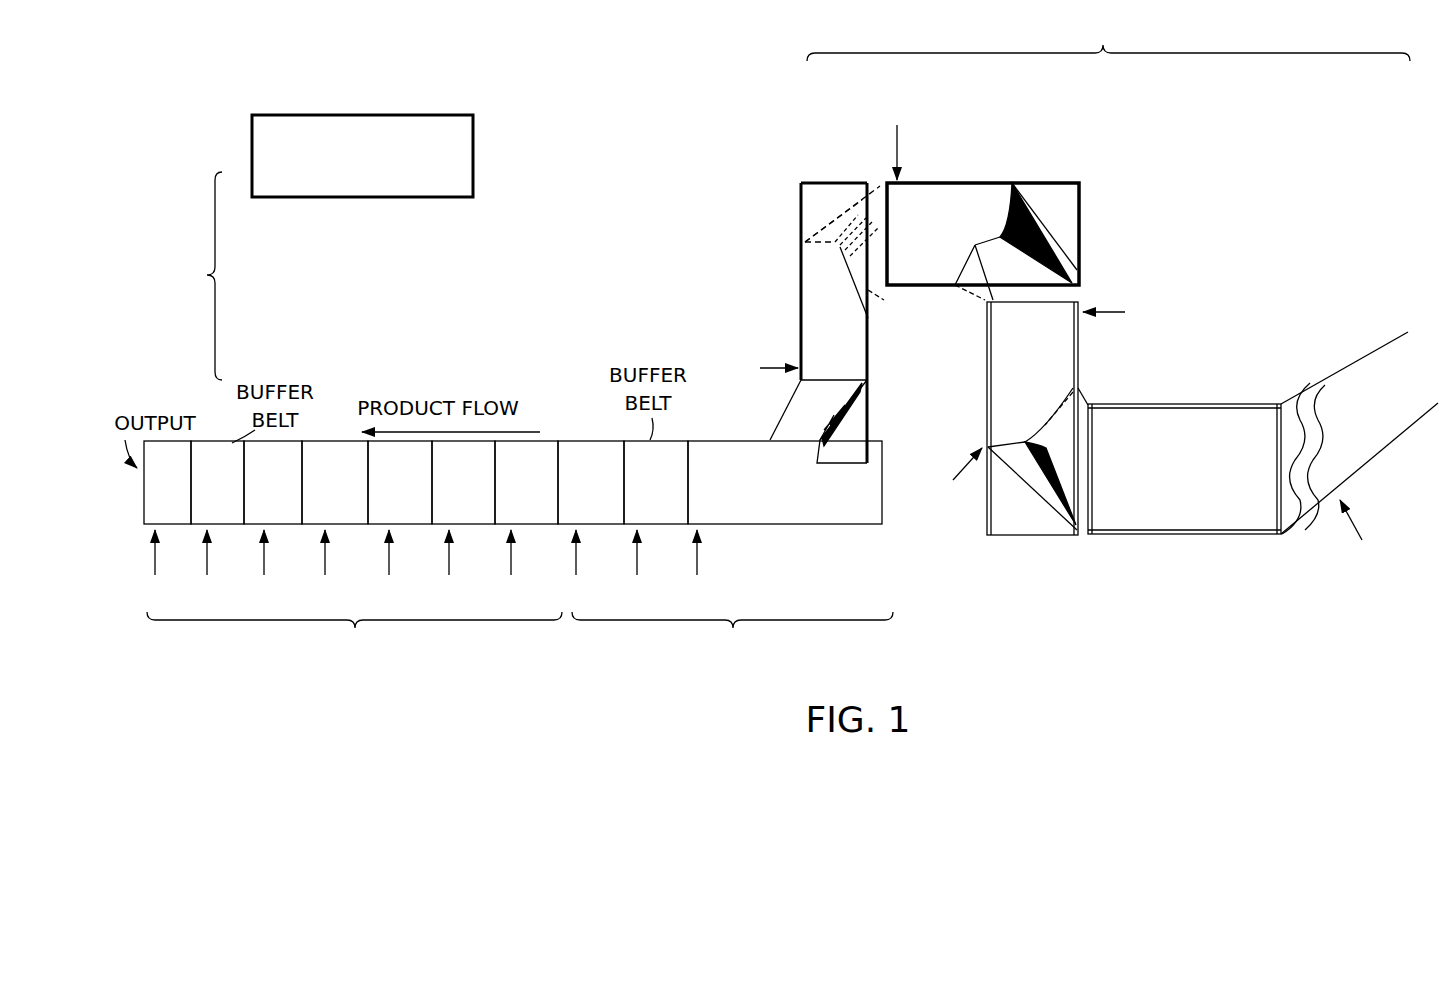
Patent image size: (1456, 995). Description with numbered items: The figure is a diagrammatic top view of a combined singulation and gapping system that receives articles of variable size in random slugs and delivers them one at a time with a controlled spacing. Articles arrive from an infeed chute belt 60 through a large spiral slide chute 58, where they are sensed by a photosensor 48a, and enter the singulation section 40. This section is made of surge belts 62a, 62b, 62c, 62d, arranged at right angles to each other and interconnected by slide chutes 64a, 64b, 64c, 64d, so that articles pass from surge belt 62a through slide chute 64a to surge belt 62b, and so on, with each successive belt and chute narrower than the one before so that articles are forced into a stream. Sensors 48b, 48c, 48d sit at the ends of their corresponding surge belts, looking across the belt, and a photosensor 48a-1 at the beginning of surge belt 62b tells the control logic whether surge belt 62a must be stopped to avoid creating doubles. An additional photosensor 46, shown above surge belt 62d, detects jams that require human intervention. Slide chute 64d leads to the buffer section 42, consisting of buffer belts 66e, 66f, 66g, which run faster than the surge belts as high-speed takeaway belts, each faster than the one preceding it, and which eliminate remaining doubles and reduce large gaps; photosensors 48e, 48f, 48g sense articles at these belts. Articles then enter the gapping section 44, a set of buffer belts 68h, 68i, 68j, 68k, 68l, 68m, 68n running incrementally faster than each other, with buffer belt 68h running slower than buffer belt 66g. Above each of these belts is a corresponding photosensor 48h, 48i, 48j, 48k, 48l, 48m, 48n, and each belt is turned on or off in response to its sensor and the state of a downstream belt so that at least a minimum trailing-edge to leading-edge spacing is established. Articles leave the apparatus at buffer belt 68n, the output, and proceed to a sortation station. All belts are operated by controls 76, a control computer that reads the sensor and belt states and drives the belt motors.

The singulation section 40 is at (1108, 39).
The buffer section 42 is at (732, 636).
The gapping section 44 is at (354, 636).
The photosensor 46 is at (803, 242).
The photosensor 48a is at (1364, 528).
The photosensor 48a-1 is at (950, 475).
The sensor 48b is at (1126, 312).
The sensor 48c is at (893, 140).
The sensor 48d is at (757, 368).
The photosensor 48e is at (702, 567).
The photosensor 48f is at (637, 567).
The photosensor 48g is at (575, 567).
The photosensor 48h is at (511, 567).
The photosensor 48i is at (449, 567).
The photosensor 48j is at (388, 567).
The photosensor 48k is at (323, 567).
The photosensor 48l is at (261, 567).
The photosensor 48m is at (205, 567).
The photosensor 48n is at (153, 567).
The spiral slide chute 58 is at (1293, 405).
The infeed chute belt 60 is at (1418, 418).
The surge belt 62a is at (1184, 469).
The surge belt 62b is at (1032, 418).
The surge belt 62c is at (983, 234).
The surge belt 62d is at (800, 318).
The slide chute 64a is at (1030, 520).
The slide chute 64b is at (1076, 178).
The slide chute 64c is at (815, 178).
The slide chute 64d is at (874, 415).
The buffer belt 66e is at (785, 482).
The buffer belt 66f is at (656, 482).
The buffer belt 66g is at (591, 482).
The buffer belt 68h is at (526, 482).
The buffer belt 68i is at (463, 482).
The buffer belt 68j is at (400, 482).
The buffer belt 68k is at (335, 482).
The buffer belt 68l is at (273, 482).
The buffer belt 68m is at (217, 482).
The buffer belt 68n is at (167, 482).
The controls 76 is at (476, 153).